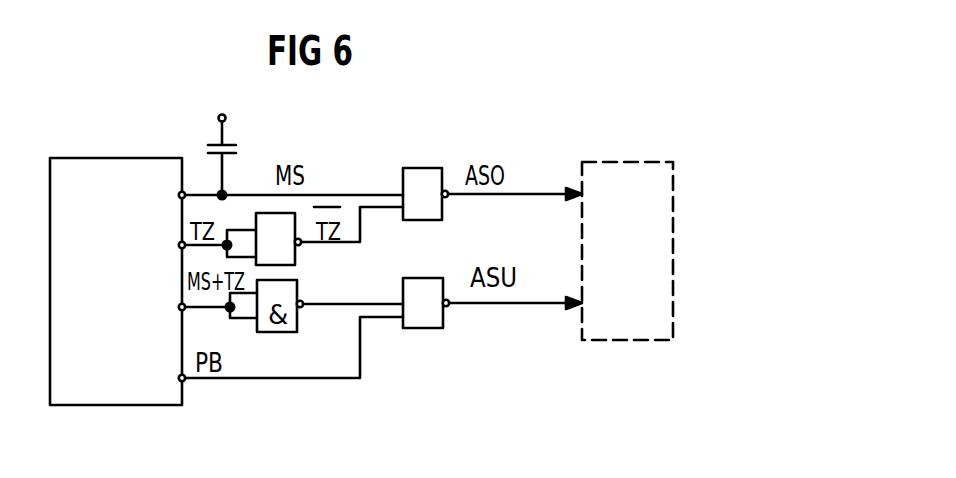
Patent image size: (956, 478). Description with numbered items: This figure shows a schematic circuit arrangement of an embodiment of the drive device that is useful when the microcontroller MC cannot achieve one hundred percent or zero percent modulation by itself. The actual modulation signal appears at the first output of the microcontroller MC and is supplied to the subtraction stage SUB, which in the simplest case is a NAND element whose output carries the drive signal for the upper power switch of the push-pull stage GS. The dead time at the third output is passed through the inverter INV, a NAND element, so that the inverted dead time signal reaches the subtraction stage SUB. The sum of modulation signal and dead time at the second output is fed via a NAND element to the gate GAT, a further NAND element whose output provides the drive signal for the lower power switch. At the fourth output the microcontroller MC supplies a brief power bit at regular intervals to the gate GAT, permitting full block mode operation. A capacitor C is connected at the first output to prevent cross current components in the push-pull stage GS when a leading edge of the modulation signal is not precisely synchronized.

The microcontroller MC is at (128, 390).
The capacitor C is at (200, 152).
The inverter INV is at (296, 267).
The subtraction stage SUB is at (445, 166).
The gate GAT is at (443, 330).
The push-pull stage GS is at (627, 251).